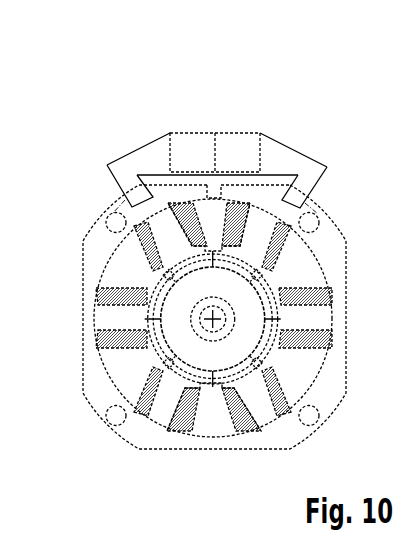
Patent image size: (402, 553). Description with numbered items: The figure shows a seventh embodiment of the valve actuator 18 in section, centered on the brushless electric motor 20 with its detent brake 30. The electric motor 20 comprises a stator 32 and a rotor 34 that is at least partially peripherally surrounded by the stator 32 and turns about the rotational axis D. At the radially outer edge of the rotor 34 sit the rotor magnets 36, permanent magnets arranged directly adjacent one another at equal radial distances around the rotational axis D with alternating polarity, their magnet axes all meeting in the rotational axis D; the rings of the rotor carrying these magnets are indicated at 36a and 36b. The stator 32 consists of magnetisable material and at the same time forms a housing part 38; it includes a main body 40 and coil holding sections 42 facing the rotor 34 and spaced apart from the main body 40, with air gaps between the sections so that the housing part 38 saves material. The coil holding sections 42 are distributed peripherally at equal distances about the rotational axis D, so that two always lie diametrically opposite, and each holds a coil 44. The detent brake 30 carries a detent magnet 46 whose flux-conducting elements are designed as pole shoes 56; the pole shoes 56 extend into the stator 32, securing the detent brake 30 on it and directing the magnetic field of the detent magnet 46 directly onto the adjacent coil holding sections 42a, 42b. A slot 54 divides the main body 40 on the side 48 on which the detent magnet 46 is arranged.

The valve actuator 18 is at (340, 124).
The electric motor 20 is at (92, 201).
The detent brake 30 is at (247, 123).
The stator 32 is at (343, 243).
The rotor 34 is at (248, 323).
The rotor magnets 36 is at (180, 370).
The rotor ring 36a is at (170, 282).
The rotor outer ring 36b is at (262, 292).
The housing part 38 is at (320, 213).
The main body 40 is at (88, 242).
The coil holding sections 42 is at (133, 323).
The coil holding section 42a is at (158, 232).
The coil holding section 42b is at (273, 232).
The coil 44 is at (107, 298).
The detent magnet 46 is at (214, 183).
The side 48 is at (151, 180).
The slot 54 is at (210, 181).
The pole shoes 56 is at (118, 167).
The rotational axis D is at (215, 322).